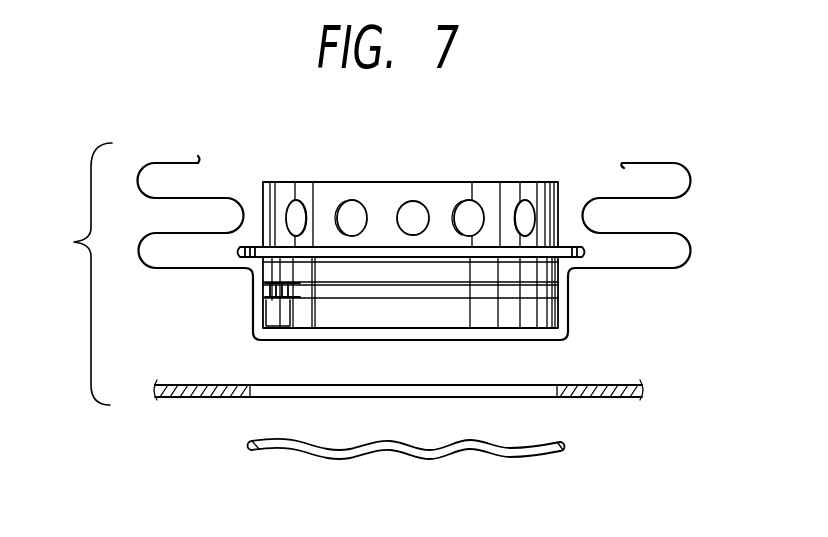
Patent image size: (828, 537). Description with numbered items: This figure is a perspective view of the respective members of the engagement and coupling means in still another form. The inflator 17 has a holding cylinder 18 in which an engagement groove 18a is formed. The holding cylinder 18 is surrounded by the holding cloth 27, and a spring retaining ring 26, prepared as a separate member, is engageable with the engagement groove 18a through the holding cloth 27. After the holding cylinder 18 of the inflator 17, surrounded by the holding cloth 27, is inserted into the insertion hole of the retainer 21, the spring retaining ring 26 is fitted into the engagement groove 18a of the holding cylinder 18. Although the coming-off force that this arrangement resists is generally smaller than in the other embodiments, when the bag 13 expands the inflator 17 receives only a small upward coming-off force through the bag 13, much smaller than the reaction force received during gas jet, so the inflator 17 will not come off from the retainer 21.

The bag 13 is at (622, 163).
The inflator 17 is at (490, 183).
The holding cylinder 18 is at (280, 316).
The engagement groove 18a is at (297, 290).
The retainer 21 is at (606, 397).
The spring retaining ring 26 is at (523, 458).
The holding cloth 27 is at (568, 302).